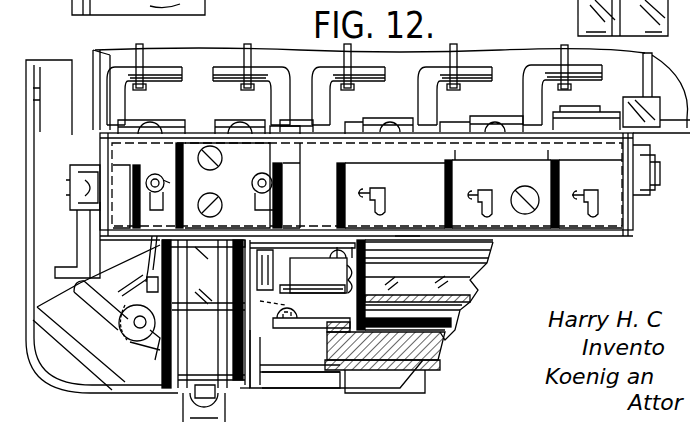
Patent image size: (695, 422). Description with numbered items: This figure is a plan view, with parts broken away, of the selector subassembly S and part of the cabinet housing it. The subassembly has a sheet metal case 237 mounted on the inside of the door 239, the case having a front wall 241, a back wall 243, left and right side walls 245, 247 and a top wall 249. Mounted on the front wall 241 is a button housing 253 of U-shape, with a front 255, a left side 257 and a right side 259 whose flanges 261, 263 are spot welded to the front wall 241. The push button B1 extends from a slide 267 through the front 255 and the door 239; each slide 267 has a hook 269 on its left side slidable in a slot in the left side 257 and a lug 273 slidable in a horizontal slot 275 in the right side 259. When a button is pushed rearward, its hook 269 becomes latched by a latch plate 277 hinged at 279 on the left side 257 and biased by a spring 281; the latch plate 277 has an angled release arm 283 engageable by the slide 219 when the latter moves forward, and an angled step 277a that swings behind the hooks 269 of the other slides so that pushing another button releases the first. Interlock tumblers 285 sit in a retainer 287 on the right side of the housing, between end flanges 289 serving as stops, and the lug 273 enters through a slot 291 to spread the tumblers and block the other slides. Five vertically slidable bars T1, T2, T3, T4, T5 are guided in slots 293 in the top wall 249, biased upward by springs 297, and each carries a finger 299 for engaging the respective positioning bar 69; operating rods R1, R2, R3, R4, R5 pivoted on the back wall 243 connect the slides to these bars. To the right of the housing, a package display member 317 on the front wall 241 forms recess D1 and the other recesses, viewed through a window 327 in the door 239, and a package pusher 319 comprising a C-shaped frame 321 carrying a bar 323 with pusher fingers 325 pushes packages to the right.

The selector subassembly S is at (289, 40).
The positioning bar 69 is at (146, 48).
The finger 299 is at (184, 70).
The operating rod R1 is at (191, 126).
The operating rod R2 is at (230, 126).
The operating rod R3 is at (331, 129).
The operating rod R4 is at (358, 129).
The operating rod R5 is at (495, 126).
The back wall 243 is at (456, 125).
The left side wall 245 is at (96, 152).
The right side wall 247 is at (632, 138).
The sheet metal case 237 is at (622, 208).
The slot 293 is at (137, 167).
The spring 297 is at (157, 181).
The top wall 249 is at (418, 181).
The vertically slidable bar T1 is at (133, 182).
The vertically slidable bar T2 is at (285, 180).
The vertically slidable bar T3 is at (346, 180).
The vertically slidable bar T4 is at (483, 181).
The vertically slidable bar T5 is at (561, 177).
The slide 219 is at (92, 223).
The flange 261 is at (100, 240).
The latch plate 277 is at (151, 244).
The angled step 277a is at (149, 270).
The hook 269 is at (138, 289).
The angled release arm 283 is at (80, 286).
The hinge 279 is at (134, 322).
The spring 281 is at (140, 345).
The left side 257 is at (162, 371).
The button housing 253 is at (163, 386).
The slide 267 is at (216, 334).
The interlock tumbler 285 is at (233, 247).
The end flange 289 is at (234, 262).
The horizontal slot 275 is at (225, 375).
The push button B1 is at (188, 406).
The flange 263 is at (301, 246).
The package pusher 319 is at (338, 237).
The C-shaped frame 321 is at (355, 238).
The retainer 287 is at (313, 271).
The bar 323 is at (338, 279).
The slot 291 is at (291, 318).
The window 327 is at (405, 352).
The door 239 is at (315, 389).
The lug 273 is at (259, 363).
The right side 259 is at (256, 377).
The front 255 is at (250, 389).
The package-holding recess D1 is at (467, 318).
The pusher finger 325 is at (375, 284).
The package display member 317 is at (490, 260).
The front wall 241 is at (405, 239).